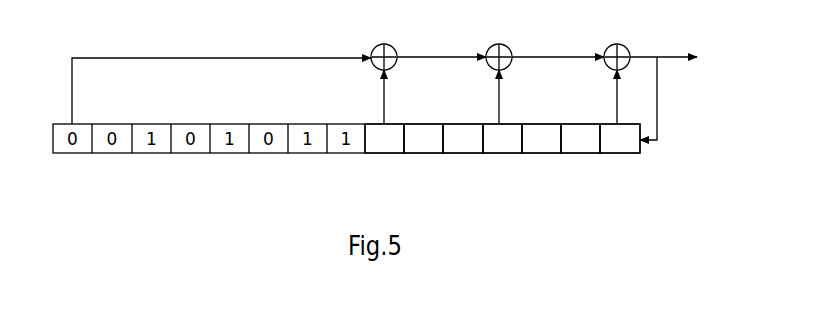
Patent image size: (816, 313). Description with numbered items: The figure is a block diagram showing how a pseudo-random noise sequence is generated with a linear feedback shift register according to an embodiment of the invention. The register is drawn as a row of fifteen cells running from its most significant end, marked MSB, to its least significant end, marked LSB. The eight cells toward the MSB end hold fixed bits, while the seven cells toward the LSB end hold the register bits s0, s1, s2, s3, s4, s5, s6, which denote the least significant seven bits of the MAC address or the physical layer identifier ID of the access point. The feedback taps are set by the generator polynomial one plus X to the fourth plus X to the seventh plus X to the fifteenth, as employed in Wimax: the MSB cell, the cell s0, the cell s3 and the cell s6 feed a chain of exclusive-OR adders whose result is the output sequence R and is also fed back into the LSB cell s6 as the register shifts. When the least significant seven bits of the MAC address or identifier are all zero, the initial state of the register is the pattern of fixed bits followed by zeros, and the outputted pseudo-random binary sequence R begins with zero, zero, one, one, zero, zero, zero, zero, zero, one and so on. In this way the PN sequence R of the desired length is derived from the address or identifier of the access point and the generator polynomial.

The register bit s0 is at (384, 138).
The register bit s1 is at (423, 138).
The register bit s2 is at (463, 138).
The register bit s3 is at (502, 138).
The register bit s4 is at (541, 138).
The register bit s5 is at (580, 138).
The register bit s6 is at (620, 138).
The most significant bit input MSB is at (212, 121).
The least significant bit feedback LSB is at (629, 120).
The PN sequence R is at (663, 44).